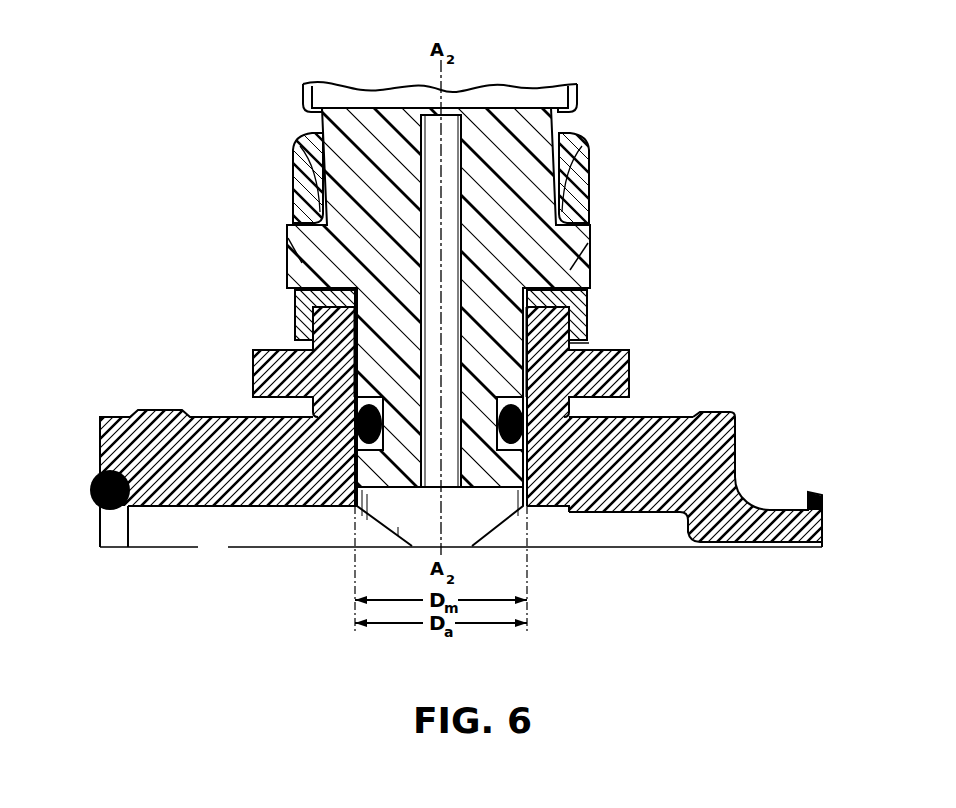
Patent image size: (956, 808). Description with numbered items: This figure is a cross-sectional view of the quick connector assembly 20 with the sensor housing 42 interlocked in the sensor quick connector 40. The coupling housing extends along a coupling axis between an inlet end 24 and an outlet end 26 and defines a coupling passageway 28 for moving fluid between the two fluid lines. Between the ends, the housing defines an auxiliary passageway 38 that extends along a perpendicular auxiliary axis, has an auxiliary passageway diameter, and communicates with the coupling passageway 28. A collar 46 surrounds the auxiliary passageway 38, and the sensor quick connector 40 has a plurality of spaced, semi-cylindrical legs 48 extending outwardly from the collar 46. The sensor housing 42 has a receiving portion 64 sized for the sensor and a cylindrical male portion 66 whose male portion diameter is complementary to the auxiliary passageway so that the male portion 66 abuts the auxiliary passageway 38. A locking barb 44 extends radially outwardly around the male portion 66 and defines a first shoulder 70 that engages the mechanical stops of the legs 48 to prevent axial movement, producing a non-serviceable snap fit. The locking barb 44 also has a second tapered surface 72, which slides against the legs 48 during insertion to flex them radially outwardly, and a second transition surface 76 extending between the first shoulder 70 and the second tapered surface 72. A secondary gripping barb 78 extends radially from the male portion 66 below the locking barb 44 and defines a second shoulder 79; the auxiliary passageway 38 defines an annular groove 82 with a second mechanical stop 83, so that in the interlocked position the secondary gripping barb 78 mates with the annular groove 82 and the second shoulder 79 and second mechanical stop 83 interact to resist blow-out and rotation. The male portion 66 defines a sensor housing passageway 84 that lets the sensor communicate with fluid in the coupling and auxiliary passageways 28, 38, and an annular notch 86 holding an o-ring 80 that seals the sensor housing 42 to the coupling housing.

The quick connector assembly 20 is at (614, 32).
The inlet end 24 is at (100, 445).
The outlet end 26 is at (822, 515).
The coupling passageway 28 is at (252, 507).
The auxiliary passageway 38 is at (520, 506).
The sensor quick connector 40 is at (295, 317).
The sensor housing 42 is at (558, 130).
The locking barb 44 is at (288, 235).
The collar 46 is at (253, 378).
The leg 48 is at (293, 190).
The receiving portion 64 is at (577, 98).
The male portion 66 is at (553, 298).
The first shoulder 70 is at (568, 225).
The second tapered surface 72 is at (300, 268).
The second transition surface 76 is at (591, 248).
The secondary gripping barb 78 is at (355, 352).
The second shoulder 79 is at (572, 343).
The o-ring 80 is at (357, 428).
The annular groove 82 is at (522, 360).
The second mechanical stop 83 is at (383, 392).
The sensor housing passageway 84 is at (462, 160).
The annular notch 86 is at (597, 442).